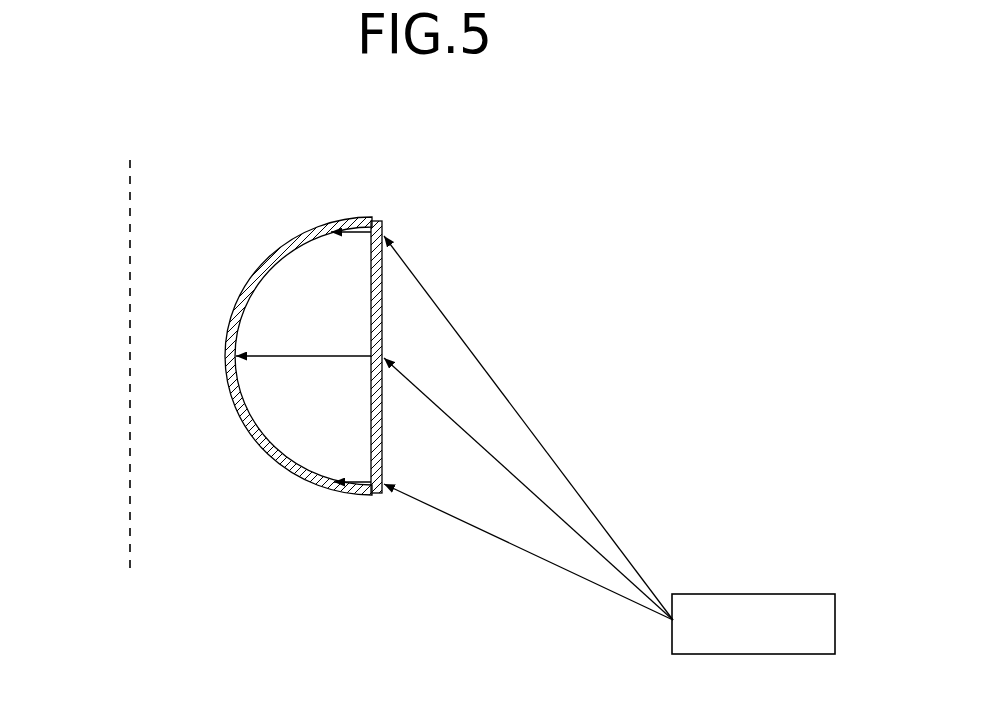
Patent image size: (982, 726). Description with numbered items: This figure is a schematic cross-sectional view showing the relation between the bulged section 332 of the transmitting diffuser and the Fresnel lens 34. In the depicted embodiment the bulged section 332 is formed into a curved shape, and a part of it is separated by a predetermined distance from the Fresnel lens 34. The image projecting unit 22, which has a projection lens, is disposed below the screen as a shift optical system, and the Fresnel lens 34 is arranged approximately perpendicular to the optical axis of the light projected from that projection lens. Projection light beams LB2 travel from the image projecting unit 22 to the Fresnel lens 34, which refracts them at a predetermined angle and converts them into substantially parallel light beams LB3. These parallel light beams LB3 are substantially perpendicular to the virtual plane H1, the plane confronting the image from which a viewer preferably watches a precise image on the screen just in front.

The virtual plane H1 is at (132, 505).
The bulged section 332 is at (267, 450).
The Fresnel lens 34 is at (383, 225).
The image projecting unit 22 is at (768, 594).
The projection light beams LB2 is at (463, 340).
The parallel light beams LB3 is at (363, 232).